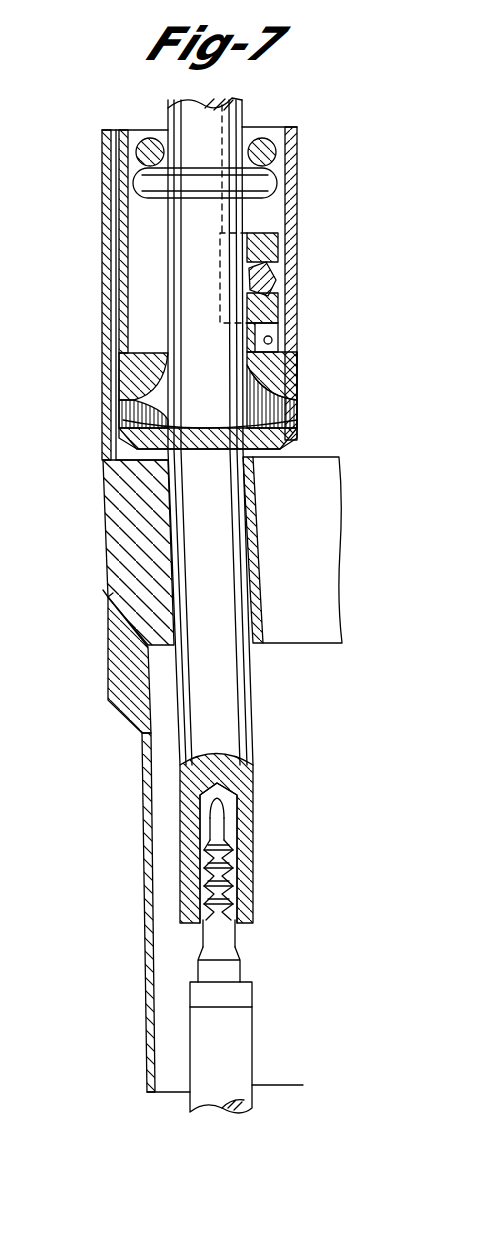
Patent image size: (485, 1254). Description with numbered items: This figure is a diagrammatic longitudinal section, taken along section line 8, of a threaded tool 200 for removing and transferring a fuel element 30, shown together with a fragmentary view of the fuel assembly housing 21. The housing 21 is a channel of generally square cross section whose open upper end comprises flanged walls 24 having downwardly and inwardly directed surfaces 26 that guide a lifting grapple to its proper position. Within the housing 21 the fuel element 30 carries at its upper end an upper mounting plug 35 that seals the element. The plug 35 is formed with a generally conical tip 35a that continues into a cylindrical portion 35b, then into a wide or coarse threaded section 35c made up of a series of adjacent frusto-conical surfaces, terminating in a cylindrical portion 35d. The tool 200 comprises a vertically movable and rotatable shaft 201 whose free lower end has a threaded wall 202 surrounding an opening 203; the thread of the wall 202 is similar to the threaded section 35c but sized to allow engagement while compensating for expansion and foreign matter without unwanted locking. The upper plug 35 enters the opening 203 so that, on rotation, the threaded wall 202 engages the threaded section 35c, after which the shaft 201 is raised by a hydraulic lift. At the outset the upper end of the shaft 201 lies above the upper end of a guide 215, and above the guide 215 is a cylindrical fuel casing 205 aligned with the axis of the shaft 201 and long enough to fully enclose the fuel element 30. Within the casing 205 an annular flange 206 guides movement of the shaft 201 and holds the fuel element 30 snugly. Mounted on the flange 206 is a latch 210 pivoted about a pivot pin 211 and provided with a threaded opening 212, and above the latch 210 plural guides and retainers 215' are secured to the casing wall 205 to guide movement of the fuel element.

The section line 8- 8 is at (95, 227).
The fuel casing 205 is at (295, 131).
The guide 215 is at (109, 387).
The guides and retainers 215' is at (245, 168).
The annular flange 206 is at (145, 388).
The latch 210 is at (272, 245).
The threaded opening 212 is at (273, 273).
The pivot pin 211 is at (272, 340).
The shaft 201 is at (254, 708).
The tool 200 is at (256, 688).
The threaded wall 202 is at (207, 848).
The opening 203 is at (207, 800).
The conical tip 35a is at (219, 803).
The cylindrical portion 35b is at (223, 823).
The upper mounting plug 35 is at (233, 884).
The threaded section 35c is at (234, 908).
The cylindrical portion 35d is at (234, 972).
The fuel element 30 is at (246, 1045).
The flanged walls 24 is at (110, 683).
The downwardly and inwardly directed surfaces 26 is at (112, 598).
The housing 21 is at (143, 931).